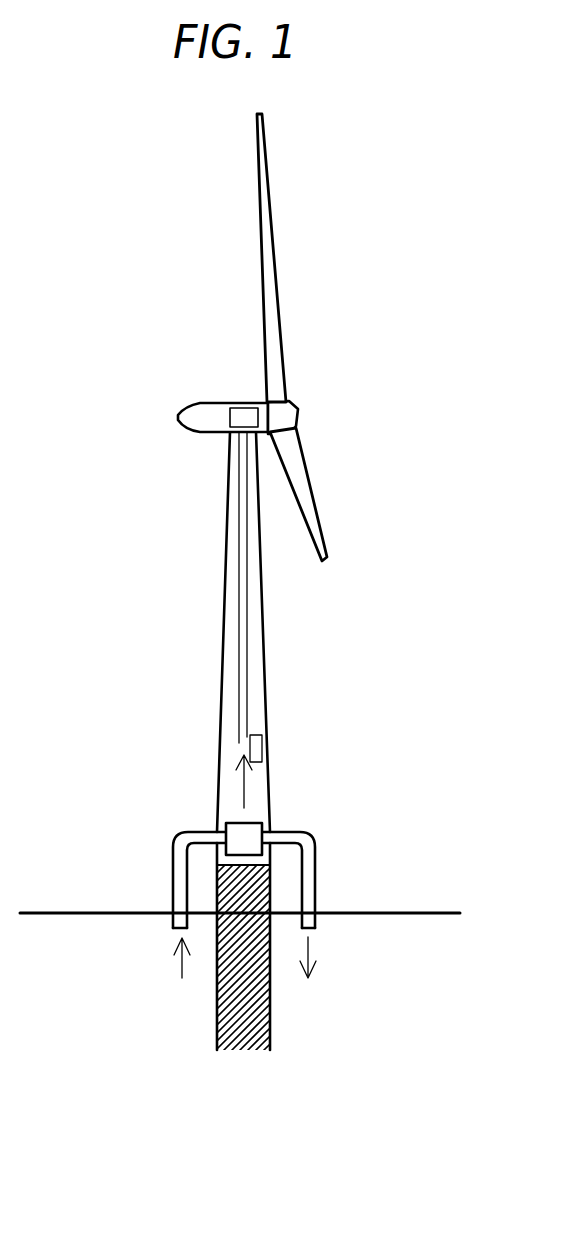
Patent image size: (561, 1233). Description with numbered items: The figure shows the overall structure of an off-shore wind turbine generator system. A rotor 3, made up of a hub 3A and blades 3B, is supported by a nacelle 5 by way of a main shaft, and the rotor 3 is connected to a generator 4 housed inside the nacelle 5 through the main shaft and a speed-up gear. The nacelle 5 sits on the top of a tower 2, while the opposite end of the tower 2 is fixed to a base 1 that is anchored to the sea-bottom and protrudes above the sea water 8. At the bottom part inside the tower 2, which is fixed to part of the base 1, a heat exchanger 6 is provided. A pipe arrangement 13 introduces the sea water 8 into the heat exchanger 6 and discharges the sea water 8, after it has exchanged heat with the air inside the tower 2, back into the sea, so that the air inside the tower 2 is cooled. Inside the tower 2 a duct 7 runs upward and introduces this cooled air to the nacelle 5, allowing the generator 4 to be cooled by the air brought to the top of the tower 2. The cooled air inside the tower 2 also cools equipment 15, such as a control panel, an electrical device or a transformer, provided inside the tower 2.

The base 1 is at (272, 1028).
The tower 2 is at (263, 668).
The rotor 3 is at (319, 337).
The hub 3A is at (298, 413).
The blades 3B is at (276, 287).
The generator 4 is at (241, 404).
The nacelle 5 is at (199, 404).
The heat exchanger 6 is at (250, 826).
The duct 7 is at (247, 622).
The sea water 8 is at (405, 912).
The pipe arrangement 13 is at (305, 845).
The equipment 15 is at (262, 736).